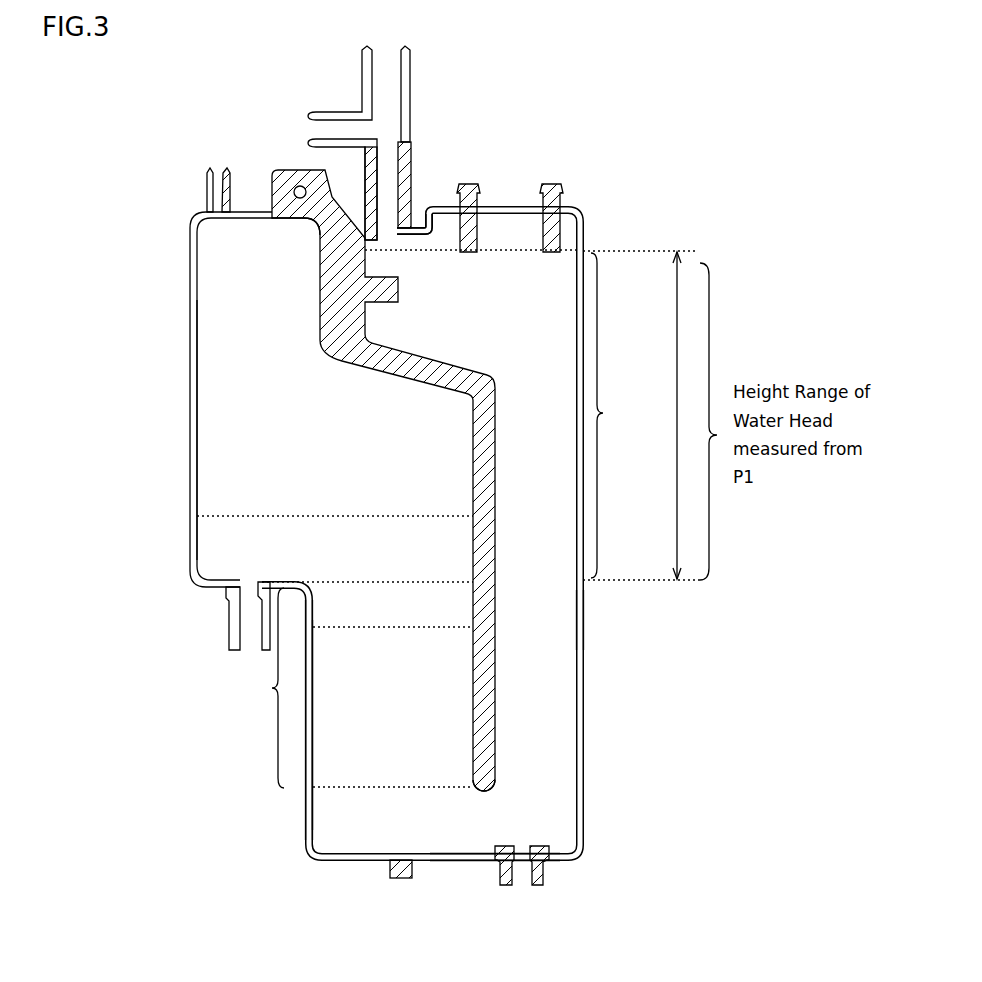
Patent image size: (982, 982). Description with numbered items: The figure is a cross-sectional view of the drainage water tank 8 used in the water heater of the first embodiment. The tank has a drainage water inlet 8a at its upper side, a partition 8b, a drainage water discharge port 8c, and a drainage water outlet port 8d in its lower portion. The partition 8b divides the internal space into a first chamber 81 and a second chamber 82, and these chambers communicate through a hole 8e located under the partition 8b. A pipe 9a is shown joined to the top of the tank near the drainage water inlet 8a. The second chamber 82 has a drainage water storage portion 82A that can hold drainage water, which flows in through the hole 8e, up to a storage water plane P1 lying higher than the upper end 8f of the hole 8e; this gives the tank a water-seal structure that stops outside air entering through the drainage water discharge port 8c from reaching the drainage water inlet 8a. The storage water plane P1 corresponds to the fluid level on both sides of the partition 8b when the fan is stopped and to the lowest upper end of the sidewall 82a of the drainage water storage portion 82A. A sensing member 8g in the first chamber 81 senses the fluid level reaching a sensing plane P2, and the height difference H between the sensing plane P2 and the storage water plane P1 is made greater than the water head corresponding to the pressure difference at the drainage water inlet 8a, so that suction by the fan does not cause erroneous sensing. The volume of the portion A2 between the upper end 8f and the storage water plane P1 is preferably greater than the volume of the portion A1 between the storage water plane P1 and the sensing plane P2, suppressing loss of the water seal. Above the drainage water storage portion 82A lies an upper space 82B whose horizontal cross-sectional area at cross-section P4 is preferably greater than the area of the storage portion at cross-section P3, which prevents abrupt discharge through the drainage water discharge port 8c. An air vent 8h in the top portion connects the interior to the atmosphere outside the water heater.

The drainage water tank 8 is at (593, 187).
The drainage water inlet 8a is at (383, 227).
The partition 8b is at (483, 687).
The drainage water discharge port 8c is at (247, 580).
The drainage water outlet port 8d is at (522, 862).
The hole 8e is at (487, 817).
The upper end of hole 8f is at (493, 792).
The sensing member 8g is at (550, 180).
The air vent 8h is at (218, 210).
The pipe 9a is at (412, 118).
The first chamber 81 is at (550, 617).
The second chamber 82 is at (93, 480).
The drainage water storage portion 82A is at (387, 698).
The upper space 82B is at (320, 442).
The sidewall 82a is at (305, 718).
The storage water plane P1 is at (363, 582).
The sensing plane P2 is at (495, 252).
The cross-section P3 is at (368, 628).
The cross-section P4 is at (312, 516).
The portion A1 is at (612, 415).
The portion A2 is at (263, 688).
The height difference H is at (643, 415).